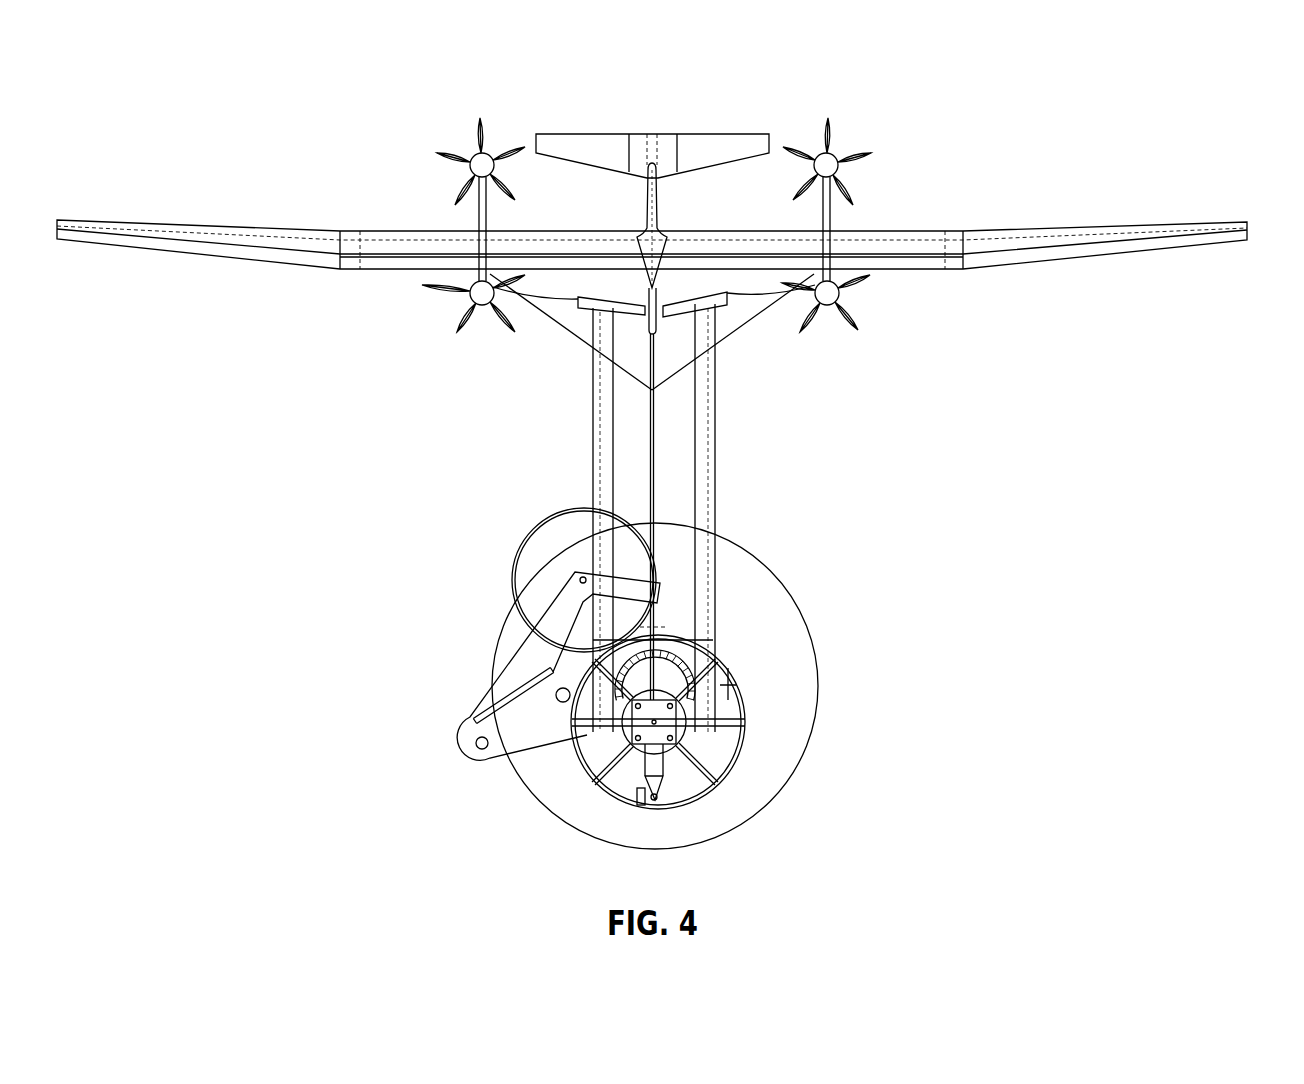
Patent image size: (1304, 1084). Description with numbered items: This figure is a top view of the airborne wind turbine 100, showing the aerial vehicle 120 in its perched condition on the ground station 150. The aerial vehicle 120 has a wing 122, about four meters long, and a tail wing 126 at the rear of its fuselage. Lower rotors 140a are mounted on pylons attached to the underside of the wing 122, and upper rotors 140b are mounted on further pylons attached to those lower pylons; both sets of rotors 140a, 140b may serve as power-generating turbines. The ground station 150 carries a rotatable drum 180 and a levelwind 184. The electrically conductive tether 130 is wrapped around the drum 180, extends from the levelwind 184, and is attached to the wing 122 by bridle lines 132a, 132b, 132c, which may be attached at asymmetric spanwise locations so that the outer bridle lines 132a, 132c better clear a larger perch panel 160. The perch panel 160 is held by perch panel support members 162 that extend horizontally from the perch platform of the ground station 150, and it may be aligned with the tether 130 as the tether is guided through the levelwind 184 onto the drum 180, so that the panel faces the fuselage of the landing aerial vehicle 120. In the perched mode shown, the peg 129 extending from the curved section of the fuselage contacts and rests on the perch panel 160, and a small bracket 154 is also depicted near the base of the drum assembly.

The airborne wind turbine 100 is at (1088, 450).
The aerial vehicle 120 is at (943, 153).
The wing 122 is at (908, 248).
The tail wing 126 is at (652, 167).
The perch panel 160 is at (675, 303).
The lower rotors 140a is at (482, 303).
The upper rotors 140b is at (483, 162).
The peg 129 is at (662, 323).
The tether 130 is at (652, 463).
The bridle line 132a is at (548, 317).
The bridle line 132b is at (652, 360).
The bridle line 132c is at (762, 314).
The perch panel support members 162 is at (598, 430).
The ground station 150 is at (972, 758).
The rotatable drum 180 is at (728, 762).
The levelwind 184 is at (530, 530).
The bracket 154 is at (655, 805).